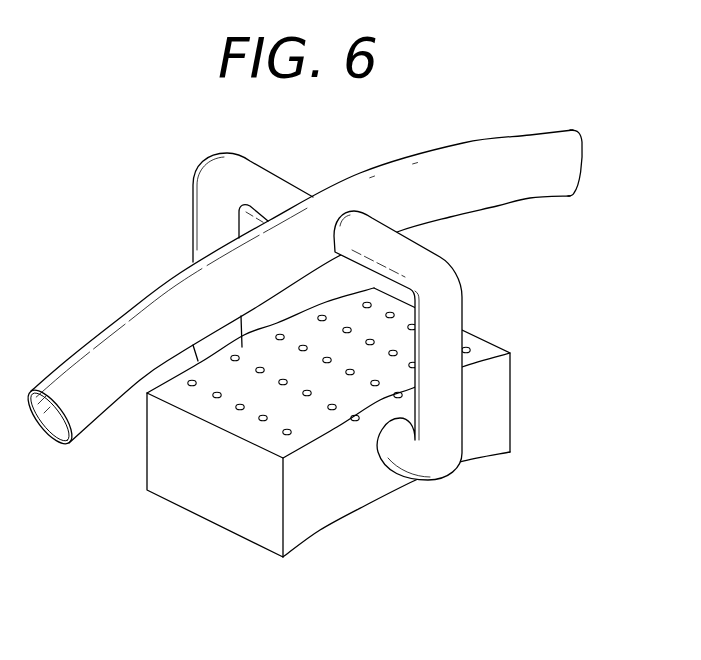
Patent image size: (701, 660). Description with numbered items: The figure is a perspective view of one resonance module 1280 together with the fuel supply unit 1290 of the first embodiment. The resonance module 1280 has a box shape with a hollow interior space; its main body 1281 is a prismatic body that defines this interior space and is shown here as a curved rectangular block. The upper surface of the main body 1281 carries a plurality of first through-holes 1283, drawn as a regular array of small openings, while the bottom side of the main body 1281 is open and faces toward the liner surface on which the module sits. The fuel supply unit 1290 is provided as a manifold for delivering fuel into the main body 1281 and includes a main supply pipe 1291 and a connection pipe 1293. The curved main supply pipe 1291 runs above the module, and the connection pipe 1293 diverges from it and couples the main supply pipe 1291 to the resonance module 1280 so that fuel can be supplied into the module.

The resonance module 1280 is at (380, 399).
The main body 1281 is at (328, 478).
The first through-holes 1283 is at (236, 407).
The fuel supply unit 1290 is at (429, 316).
The main supply pipe 1291 is at (458, 188).
The connection pipe 1293 is at (442, 397).